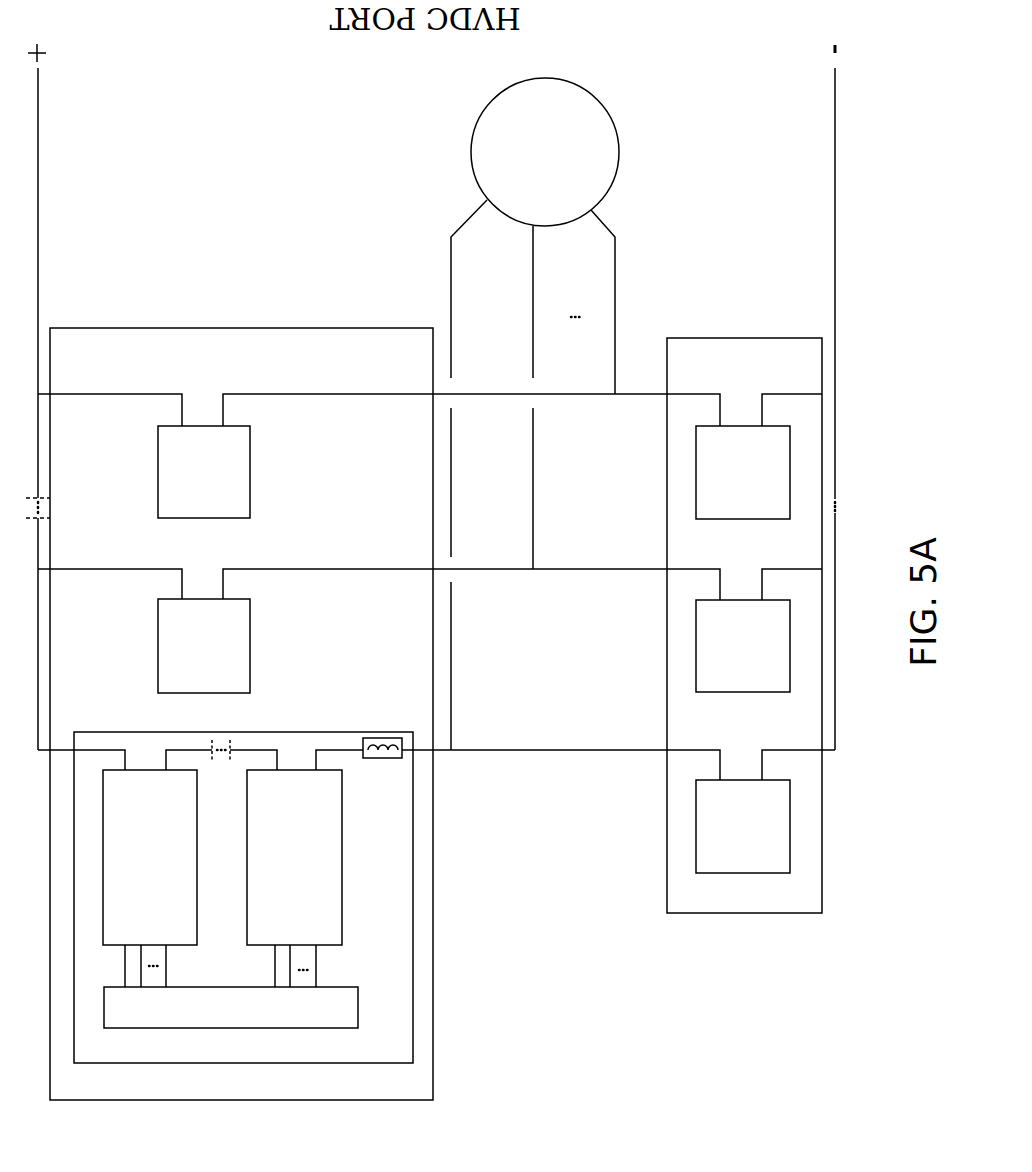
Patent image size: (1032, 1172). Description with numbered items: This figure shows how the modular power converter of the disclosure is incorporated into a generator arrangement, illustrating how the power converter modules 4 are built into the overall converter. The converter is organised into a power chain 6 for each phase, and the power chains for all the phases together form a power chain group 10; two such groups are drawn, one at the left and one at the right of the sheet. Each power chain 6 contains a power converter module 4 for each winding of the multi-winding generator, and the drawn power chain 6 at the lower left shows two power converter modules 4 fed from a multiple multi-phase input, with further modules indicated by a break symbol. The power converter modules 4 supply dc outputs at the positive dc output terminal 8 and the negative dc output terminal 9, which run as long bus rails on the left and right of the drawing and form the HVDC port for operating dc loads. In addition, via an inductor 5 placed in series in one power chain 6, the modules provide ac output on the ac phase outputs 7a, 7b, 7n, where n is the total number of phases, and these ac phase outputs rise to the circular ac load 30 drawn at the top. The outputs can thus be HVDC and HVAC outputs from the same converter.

The power converter module 4 is at (103, 868).
The inductor 5 is at (363, 742).
The power chain 6 is at (158, 478).
The ac phase output 7a is at (451, 316).
The ac phase output 7b is at (533, 316).
The ac phase output 7n is at (615, 316).
The positive dc output terminal 8 is at (38, 88).
The negative dc output terminal 9 is at (835, 90).
The power chain group 10 is at (146, 328).
The ac load 30 is at (593, 100).